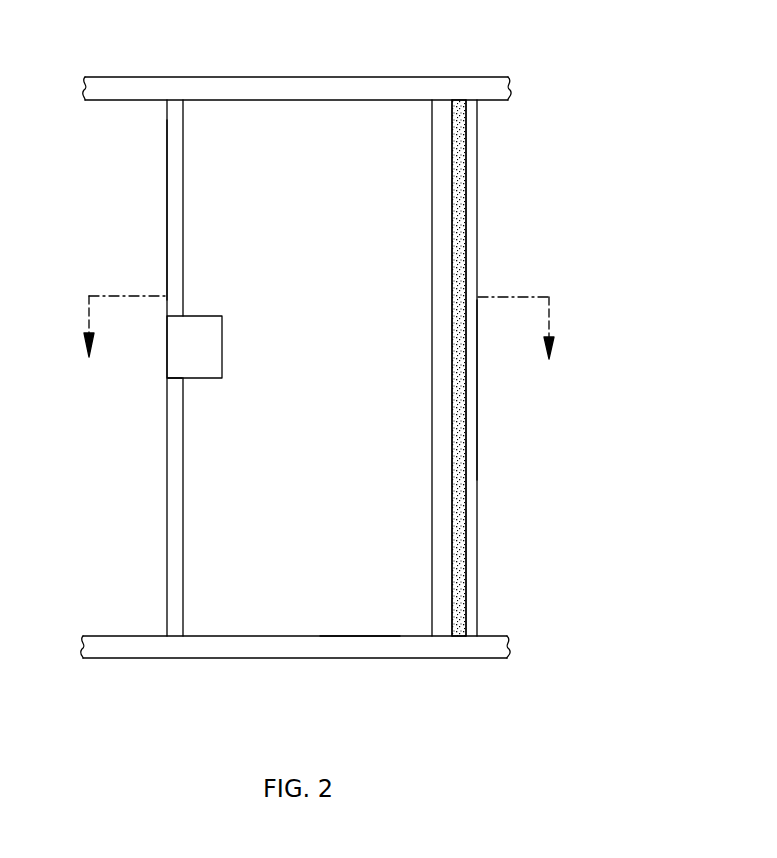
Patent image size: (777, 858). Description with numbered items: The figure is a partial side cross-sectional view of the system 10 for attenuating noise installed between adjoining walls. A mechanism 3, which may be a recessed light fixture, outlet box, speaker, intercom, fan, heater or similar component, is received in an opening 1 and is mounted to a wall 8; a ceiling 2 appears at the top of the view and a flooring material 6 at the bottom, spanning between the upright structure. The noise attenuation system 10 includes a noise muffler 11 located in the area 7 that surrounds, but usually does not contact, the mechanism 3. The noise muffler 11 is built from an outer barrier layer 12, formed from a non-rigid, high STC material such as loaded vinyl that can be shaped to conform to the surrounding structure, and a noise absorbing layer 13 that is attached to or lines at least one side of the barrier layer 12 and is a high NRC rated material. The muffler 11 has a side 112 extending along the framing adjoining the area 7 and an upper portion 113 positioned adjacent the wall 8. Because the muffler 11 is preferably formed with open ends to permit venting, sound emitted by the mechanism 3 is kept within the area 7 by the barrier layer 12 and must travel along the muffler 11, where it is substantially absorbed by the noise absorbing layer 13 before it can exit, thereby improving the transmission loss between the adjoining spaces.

The opening 1 is at (174, 380).
The ceiling 2 is at (133, 92).
The mechanism 3 is at (248, 352).
The flooring material 6 is at (133, 650).
The area 7 is at (203, 525).
The wall 8 is at (167, 230).
The system for attenuating noise 10 is at (316, 209).
The noise muffler 11 is at (440, 221).
The barrier layer 12 is at (455, 157).
The noise absorbing layer 13 is at (378, 142).
The side 112 is at (362, 578).
The upper portion 113 is at (462, 502).